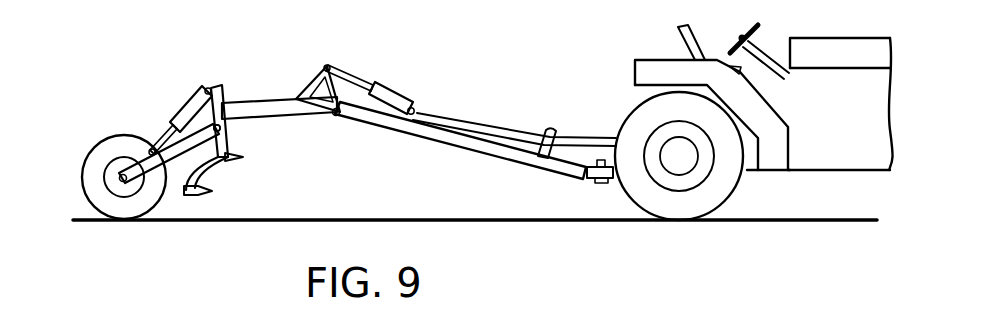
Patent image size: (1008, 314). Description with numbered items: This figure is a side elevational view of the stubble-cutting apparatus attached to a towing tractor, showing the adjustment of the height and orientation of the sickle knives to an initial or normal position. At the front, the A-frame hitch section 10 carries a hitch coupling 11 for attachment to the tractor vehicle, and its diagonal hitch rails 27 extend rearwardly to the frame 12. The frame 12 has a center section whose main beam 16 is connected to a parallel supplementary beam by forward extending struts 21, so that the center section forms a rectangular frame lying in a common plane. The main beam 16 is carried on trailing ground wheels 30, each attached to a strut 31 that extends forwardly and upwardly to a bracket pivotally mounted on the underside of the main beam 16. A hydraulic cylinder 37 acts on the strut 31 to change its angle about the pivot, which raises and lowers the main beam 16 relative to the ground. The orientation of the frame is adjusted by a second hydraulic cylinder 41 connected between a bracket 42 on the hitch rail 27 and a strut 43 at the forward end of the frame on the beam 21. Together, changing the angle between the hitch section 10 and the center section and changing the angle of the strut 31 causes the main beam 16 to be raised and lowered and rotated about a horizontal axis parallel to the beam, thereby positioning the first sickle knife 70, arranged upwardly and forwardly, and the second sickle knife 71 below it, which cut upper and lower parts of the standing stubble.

The hitch section 10 is at (523, 122).
The hitch coupling 11 is at (591, 178).
The frame 12 is at (283, 90).
The main beam 16 is at (226, 114).
The forward extending strut 21 is at (263, 103).
The diagonal hitch rail 27 is at (462, 143).
The ground wheel 30 is at (93, 173).
The strut 31 is at (122, 164).
The hydraulic cylinder 37 is at (175, 108).
The hydraulic cylinder 41 is at (396, 90).
The bracket 42 is at (420, 115).
The strut 43 is at (344, 80).
The first sickle knife 70 is at (260, 158).
The second sickle knife 71 is at (222, 190).